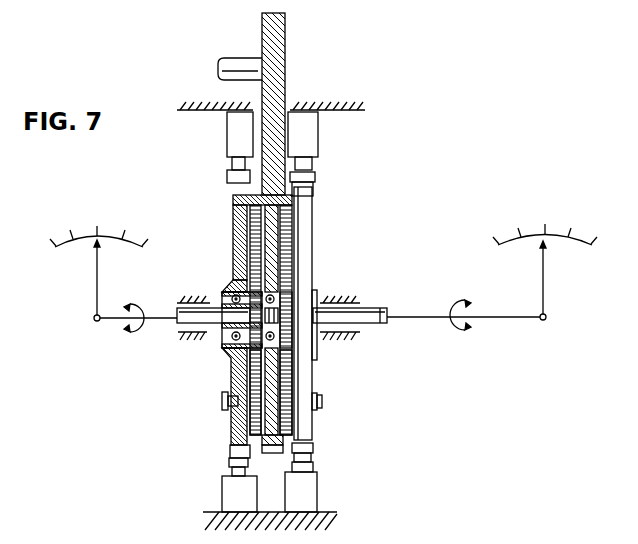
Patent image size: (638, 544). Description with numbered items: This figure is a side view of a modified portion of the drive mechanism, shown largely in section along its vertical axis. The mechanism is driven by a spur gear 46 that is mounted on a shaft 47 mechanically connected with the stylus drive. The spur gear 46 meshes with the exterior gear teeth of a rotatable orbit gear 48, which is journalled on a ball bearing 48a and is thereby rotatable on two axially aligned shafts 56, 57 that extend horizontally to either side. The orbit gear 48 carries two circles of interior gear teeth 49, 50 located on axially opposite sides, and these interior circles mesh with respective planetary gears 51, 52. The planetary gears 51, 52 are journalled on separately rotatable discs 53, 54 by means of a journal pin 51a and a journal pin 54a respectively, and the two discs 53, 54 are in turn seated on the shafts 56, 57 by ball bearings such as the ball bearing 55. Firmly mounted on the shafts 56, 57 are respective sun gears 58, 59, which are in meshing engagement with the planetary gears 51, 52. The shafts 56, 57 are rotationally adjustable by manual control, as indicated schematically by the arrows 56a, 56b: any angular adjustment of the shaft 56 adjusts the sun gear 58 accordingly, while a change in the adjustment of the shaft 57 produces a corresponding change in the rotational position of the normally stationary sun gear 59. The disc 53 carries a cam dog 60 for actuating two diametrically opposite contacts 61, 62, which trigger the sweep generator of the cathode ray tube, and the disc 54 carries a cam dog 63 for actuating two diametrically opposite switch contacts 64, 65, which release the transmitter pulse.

The spur gear 46 is at (285, 68).
The shaft 47 is at (236, 60).
The orbit gear 48 is at (278, 235).
The ball bearing 48a is at (292, 338).
The interior gear teeth 49 is at (285, 210).
The interior gear teeth 50 is at (248, 206).
The planetary gear 51 is at (288, 392).
The journal pin 51a is at (318, 406).
The planetary gear 52 is at (250, 418).
The disc 53 is at (300, 263).
The disc 54 is at (232, 374).
The journal pin 54a is at (222, 401).
The ball bearing 55 is at (226, 291).
The shaft 56 is at (381, 325).
The arrow 56a is at (457, 305).
The arrow 56b is at (140, 304).
The shaft 57 is at (177, 325).
The sun gear 58 is at (288, 293).
The sun gear 59 is at (252, 266).
The cam dog 60 is at (305, 193).
The contact 61 is at (318, 137).
The contact 62 is at (318, 486).
The cam dog 63 is at (232, 447).
The switch contact 64 is at (222, 491).
The switch contact 65 is at (227, 137).